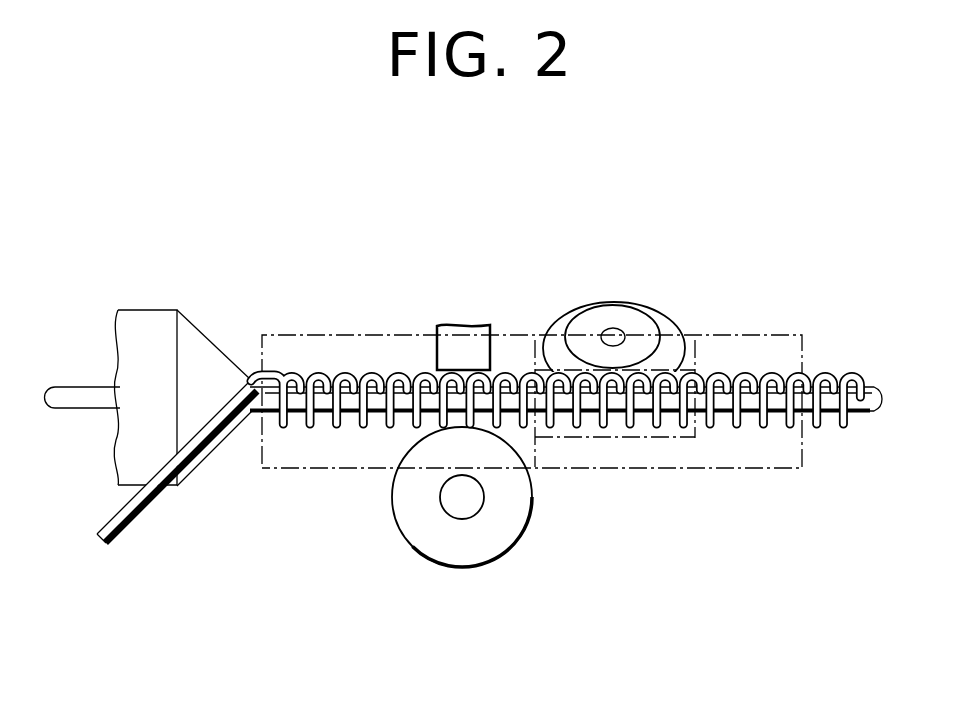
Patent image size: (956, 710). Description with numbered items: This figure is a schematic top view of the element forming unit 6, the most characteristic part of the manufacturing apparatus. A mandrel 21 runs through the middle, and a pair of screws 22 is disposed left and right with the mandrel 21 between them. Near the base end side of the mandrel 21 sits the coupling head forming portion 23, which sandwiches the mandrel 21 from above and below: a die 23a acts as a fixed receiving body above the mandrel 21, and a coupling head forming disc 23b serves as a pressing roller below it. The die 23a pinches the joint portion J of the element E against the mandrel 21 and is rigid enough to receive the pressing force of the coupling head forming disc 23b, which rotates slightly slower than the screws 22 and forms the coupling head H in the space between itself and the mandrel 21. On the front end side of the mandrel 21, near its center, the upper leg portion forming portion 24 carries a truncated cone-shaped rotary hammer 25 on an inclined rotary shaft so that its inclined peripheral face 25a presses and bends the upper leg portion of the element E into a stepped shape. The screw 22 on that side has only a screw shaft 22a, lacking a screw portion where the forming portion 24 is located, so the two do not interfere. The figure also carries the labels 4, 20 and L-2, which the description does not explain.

The rod 4 is at (135, 517).
The element forming unit 6 is at (408, 248).
The wire feed block 20 is at (193, 347).
The mandrel 21 is at (863, 417).
The screw 22 is at (328, 350).
The screw shaft 22a is at (620, 440).
The coupling head forming portion 23 is at (426, 465).
The die 23a is at (462, 347).
The coupling head forming disc 23b is at (393, 523).
The upper leg portion forming portion 24 is at (662, 291).
The rotary hammer 25 is at (612, 302).
The inclined peripheral face 25a is at (680, 320).
The joint portion J is at (777, 377).
The element E is at (825, 373).
The coupling head H is at (840, 430).
The length L-2 is at (815, 403).